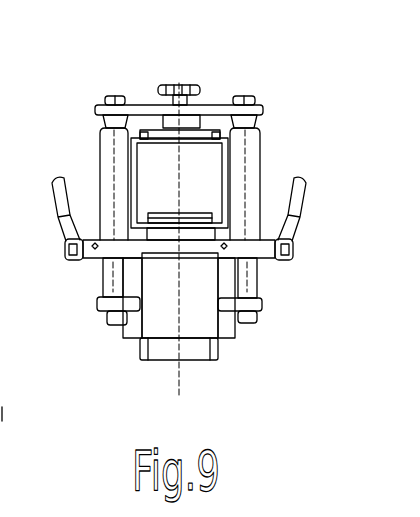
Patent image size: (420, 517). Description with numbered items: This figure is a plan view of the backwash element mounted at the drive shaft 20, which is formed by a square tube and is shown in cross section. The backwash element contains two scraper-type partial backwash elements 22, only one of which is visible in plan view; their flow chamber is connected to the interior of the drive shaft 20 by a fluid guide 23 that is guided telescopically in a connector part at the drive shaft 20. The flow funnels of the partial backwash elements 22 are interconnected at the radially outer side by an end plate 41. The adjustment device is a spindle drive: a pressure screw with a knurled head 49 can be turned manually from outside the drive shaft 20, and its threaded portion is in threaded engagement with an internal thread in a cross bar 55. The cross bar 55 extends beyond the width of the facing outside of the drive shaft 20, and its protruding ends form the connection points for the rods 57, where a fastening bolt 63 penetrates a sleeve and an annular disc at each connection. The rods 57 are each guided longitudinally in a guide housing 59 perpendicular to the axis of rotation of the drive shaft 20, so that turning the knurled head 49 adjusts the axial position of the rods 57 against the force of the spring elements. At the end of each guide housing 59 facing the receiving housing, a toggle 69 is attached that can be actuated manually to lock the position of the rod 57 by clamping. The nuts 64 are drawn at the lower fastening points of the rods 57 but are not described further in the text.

The cross bar 55 is at (148, 105).
The knurled head 49 is at (185, 83).
The fastening bolt 63 is at (110, 97).
The drive shaft 20 is at (228, 155).
The fluid guide 23 is at (157, 213).
The guide housing 59 is at (113, 163).
The toggle 69 is at (290, 238).
The rod 57 is at (110, 280).
The fastening nuts 64 is at (110, 315).
The partial backwash element 22 is at (167, 323).
The end plate 41 is at (227, 347).